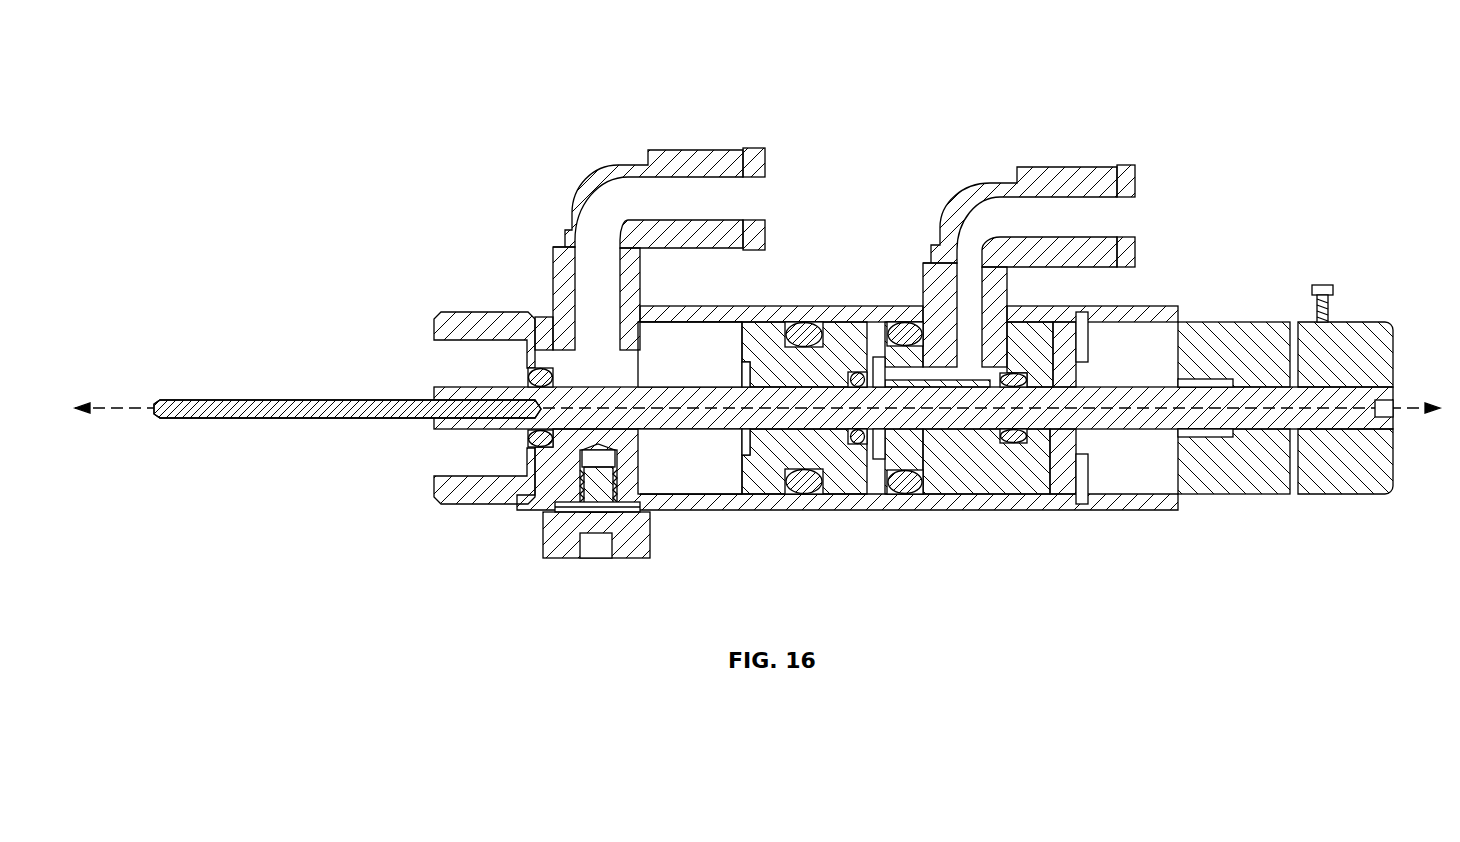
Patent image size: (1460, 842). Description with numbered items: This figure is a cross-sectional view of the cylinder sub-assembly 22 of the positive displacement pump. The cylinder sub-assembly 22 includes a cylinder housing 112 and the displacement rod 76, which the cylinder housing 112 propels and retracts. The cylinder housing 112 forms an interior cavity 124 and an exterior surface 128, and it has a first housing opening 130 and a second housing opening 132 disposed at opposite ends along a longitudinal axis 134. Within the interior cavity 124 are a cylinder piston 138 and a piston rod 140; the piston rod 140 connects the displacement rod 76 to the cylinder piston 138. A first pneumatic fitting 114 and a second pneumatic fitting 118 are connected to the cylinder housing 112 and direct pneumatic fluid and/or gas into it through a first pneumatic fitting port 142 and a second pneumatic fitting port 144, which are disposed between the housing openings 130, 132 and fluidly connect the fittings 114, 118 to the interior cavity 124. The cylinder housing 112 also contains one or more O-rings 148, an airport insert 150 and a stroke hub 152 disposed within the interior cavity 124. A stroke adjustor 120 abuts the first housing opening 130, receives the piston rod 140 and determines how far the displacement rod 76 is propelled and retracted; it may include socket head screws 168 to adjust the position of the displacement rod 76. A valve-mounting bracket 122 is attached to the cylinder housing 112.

The cylinder sub-assembly 22 is at (528, 50).
The displacement rod 76 is at (245, 400).
The cylinder housing 112 is at (807, 305).
The first pneumatic fitting 114 is at (688, 150).
The second pneumatic fitting 118 is at (1078, 167).
The stroke adjustor 120 is at (1343, 322).
The valve-mounting bracket 122 is at (632, 560).
The interior cavity 124 is at (720, 320).
The exterior surface 128 is at (695, 512).
The first housing opening 130 is at (1180, 322).
The second housing opening 132 is at (433, 338).
The longitudinal axis 134 is at (142, 408).
The cylinder piston 138 is at (740, 323).
The piston rod 140 is at (957, 492).
The first pneumatic fitting port 142 is at (553, 307).
The second pneumatic fitting port 144 is at (923, 298).
The O-ring 148 is at (543, 368).
The airport insert 150 is at (990, 487).
The stroke hub 152 is at (1083, 330).
The socket head screw 168 is at (1328, 286).